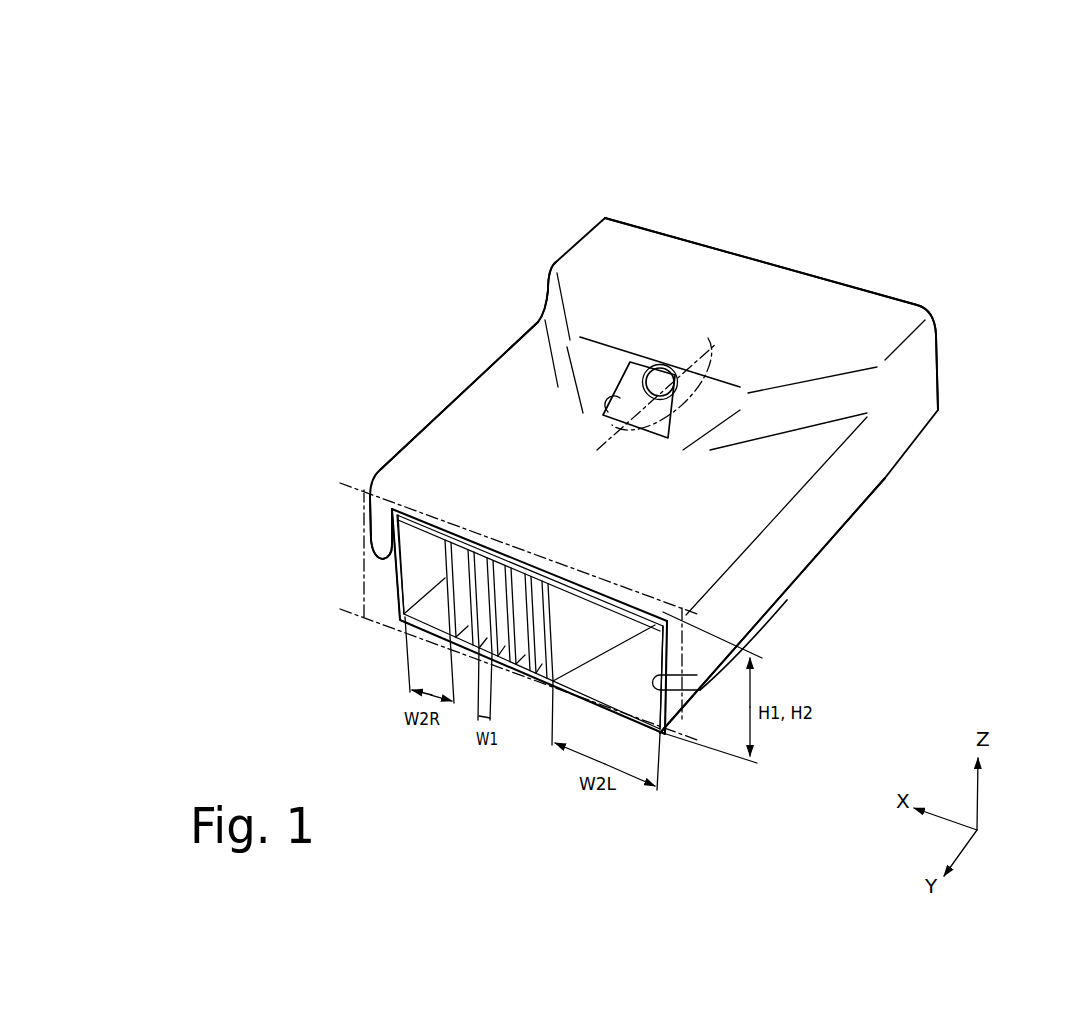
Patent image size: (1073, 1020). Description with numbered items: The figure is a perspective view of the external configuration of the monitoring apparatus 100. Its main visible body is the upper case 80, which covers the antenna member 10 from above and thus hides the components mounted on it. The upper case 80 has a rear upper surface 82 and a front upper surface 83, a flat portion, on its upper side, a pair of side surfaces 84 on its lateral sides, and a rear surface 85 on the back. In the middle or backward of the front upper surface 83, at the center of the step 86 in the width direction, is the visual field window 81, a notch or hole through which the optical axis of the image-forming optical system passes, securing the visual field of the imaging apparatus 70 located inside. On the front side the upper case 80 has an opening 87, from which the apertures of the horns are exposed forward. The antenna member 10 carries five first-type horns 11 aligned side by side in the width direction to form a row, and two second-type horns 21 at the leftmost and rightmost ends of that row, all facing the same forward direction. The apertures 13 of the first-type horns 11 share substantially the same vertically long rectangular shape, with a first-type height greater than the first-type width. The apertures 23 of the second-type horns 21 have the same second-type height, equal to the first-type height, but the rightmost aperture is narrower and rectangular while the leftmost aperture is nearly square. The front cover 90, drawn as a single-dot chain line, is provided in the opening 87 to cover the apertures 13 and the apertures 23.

The monitoring apparatus 100 is at (871, 123).
The upper case 80 is at (943, 367).
The rear upper surface 82 is at (682, 258).
The rear surface 85 is at (937, 345).
The step 86 is at (810, 407).
The side surfaces 84 is at (857, 477).
The front upper surface 83 is at (496, 372).
The visual field window 81 is at (585, 399).
The opening 87 is at (430, 535).
The imaging apparatus 70 is at (630, 357).
The antenna member 10 is at (394, 612).
The apertures 13 is at (486, 560).
The first-type horns 11 is at (450, 554).
The second-type horns 21 is at (384, 500).
The apertures 23 is at (398, 592).
The front cover 90 is at (364, 600).